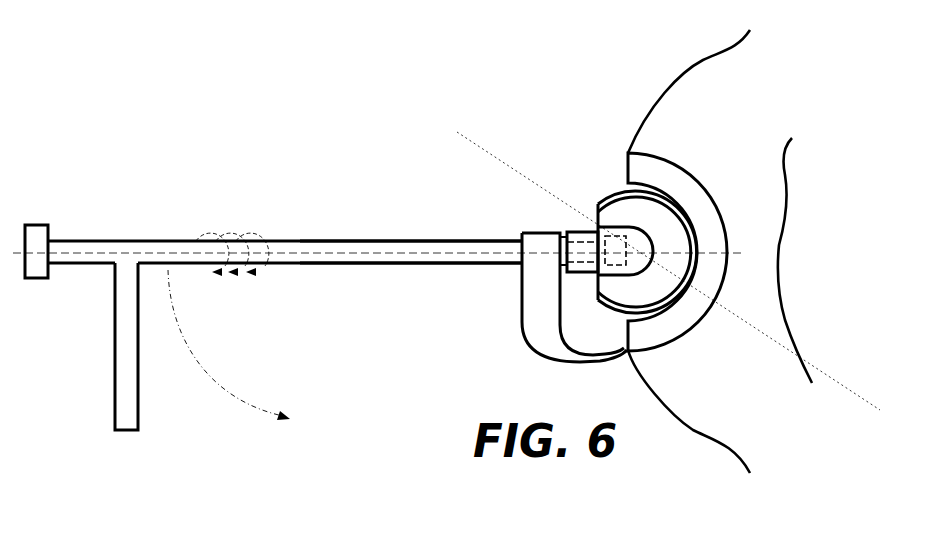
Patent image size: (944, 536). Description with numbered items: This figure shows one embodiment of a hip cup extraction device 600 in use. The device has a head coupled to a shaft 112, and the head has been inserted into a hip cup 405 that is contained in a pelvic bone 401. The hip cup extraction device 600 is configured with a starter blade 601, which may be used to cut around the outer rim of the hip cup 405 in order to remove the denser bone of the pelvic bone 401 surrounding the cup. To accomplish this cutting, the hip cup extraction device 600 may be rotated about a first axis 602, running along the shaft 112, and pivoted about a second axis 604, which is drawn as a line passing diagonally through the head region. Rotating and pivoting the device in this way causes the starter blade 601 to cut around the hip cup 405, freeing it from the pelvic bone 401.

The hip cup extraction device 600 is at (361, 258).
The first axis 602 is at (298, 240).
The shaft 112 is at (404, 238).
The starter blade 601 is at (540, 323).
The second axis 604 is at (488, 148).
The hip cup 405 is at (661, 330).
The pelvic bone 401 is at (733, 93).